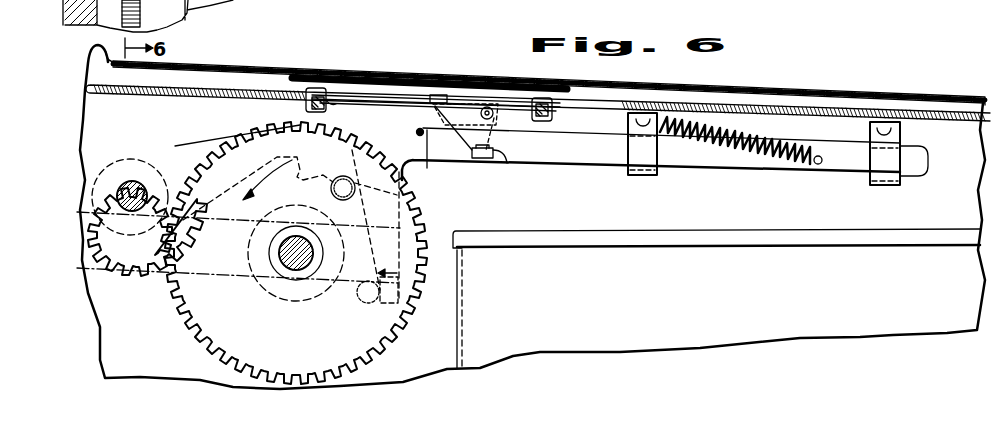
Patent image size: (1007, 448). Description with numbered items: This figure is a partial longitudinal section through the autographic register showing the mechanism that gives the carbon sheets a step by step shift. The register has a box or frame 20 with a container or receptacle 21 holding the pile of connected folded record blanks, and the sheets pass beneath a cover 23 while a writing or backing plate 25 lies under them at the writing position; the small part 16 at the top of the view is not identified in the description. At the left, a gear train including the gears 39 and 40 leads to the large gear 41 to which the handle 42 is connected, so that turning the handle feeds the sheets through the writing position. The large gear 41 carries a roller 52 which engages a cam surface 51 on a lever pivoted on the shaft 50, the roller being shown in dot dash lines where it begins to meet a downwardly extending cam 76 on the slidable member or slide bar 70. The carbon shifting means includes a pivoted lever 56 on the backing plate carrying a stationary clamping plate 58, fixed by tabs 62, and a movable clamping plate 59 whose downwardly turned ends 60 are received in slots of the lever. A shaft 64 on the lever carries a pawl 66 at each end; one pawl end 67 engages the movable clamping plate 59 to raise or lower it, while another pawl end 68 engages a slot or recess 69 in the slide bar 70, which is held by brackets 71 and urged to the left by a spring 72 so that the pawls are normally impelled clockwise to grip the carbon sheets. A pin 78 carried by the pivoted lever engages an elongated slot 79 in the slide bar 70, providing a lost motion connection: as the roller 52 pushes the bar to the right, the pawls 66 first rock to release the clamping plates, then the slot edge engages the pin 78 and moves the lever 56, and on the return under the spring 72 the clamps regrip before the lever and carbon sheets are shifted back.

The threaded stud 16 is at (149, 13).
The box or frame 20 is at (86, 108).
The container or receptacle 21 is at (935, 208).
The cover 23 is at (248, 65).
The writing or backing plate 25 is at (90, 88).
The gear 39 is at (85, 151).
The gear 40 is at (95, 190).
The large gear 41 is at (97, 30).
The handle 42 is at (80, 287).
The shaft 50 is at (125, 199).
The cam surface 51 is at (298, 176).
The roller 52 is at (357, 190).
The pivoted lever 56 is at (370, 94).
The stationary clamping plate 58 is at (340, 75).
The movable clamping plate 59 is at (410, 102).
The downwardly turned ends 60 is at (306, 100).
The tabs 62 is at (332, 104).
The shaft 64 is at (491, 108).
The pawl 66 is at (470, 103).
The pawl end 67 is at (440, 95).
The pawl end 68 is at (482, 160).
The slot or recess 69 is at (507, 163).
The slidable member or slide bar 70 is at (583, 162).
The brackets 71 is at (642, 176).
The spring 72 is at (762, 157).
The cam 76 is at (413, 279).
The pin 78 is at (442, 159).
The elongated slot 79 is at (409, 130).